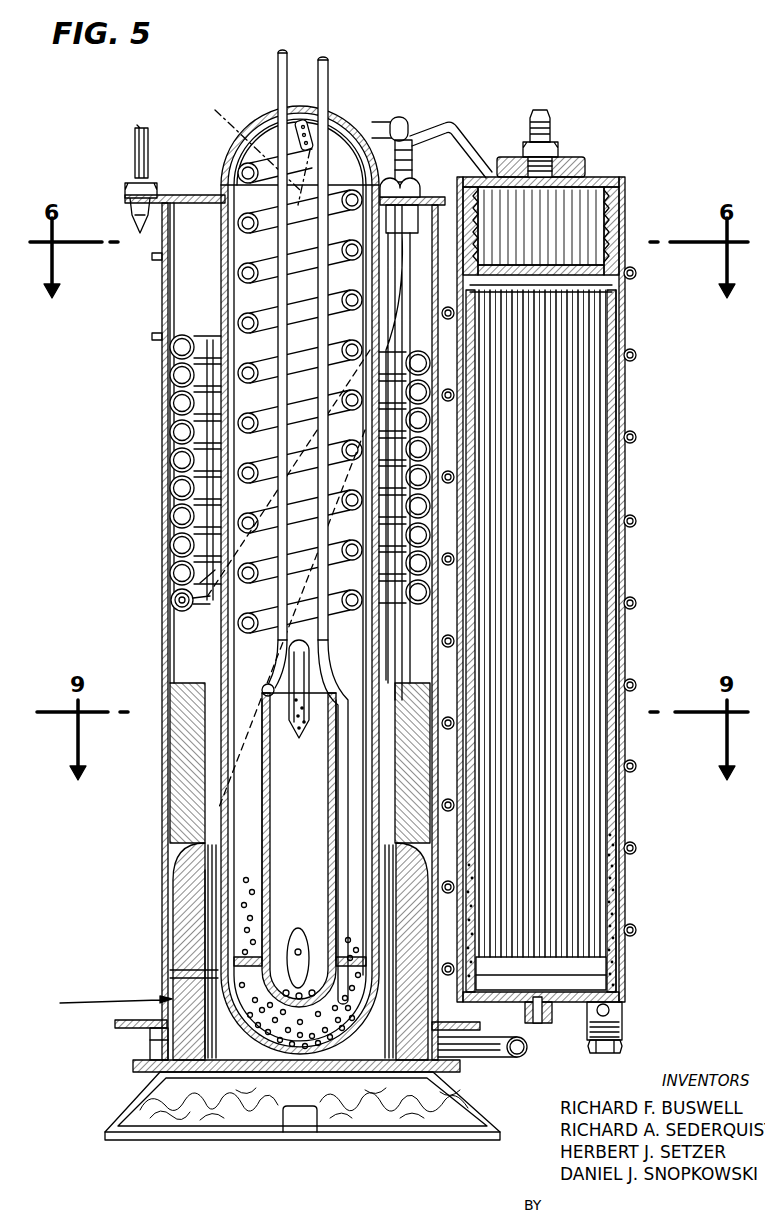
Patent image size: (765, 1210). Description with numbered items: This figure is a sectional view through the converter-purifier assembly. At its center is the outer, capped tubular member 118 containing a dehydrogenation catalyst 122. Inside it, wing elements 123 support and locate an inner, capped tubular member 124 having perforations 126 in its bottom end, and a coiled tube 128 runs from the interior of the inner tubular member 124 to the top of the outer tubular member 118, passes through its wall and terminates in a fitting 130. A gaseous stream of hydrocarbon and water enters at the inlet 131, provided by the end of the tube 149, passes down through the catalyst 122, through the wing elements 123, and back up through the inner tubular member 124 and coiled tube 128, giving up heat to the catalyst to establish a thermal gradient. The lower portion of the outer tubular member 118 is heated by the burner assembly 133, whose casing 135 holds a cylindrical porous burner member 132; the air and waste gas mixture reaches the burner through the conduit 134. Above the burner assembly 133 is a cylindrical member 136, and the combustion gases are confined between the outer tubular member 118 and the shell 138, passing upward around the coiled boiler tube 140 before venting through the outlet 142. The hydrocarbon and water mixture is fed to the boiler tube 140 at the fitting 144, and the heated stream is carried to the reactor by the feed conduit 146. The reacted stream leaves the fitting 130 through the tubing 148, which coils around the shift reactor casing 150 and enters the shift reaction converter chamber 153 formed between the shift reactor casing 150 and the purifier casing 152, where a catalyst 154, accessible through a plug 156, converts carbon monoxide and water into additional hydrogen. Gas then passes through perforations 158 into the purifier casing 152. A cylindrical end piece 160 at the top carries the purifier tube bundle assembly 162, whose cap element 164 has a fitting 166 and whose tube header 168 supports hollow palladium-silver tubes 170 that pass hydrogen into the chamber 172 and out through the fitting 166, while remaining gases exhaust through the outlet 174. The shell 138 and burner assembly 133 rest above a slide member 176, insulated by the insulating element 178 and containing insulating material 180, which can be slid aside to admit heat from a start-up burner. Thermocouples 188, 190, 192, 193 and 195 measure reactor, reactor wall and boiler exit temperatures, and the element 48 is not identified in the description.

The connector 48 is at (525, 112).
The outer capped tubular member 118 is at (192, 292).
The dehydrogenation catalyst 122 is at (247, 1028).
The wing elements 123 is at (247, 956).
The inner capped tubular member 124 is at (270, 865).
The perforations 126 is at (297, 960).
The coiled tube 128 is at (237, 397).
The fitting 130 is at (399, 118).
The inlet 131 is at (312, 128).
The porous burner member 132 is at (208, 910).
The burner assembly 133 is at (162, 1045).
The conduit 134 is at (520, 1060).
The casing 135 is at (157, 1037).
The cylindrical member 136 is at (412, 690).
The shell 138 is at (165, 655).
The coiled boiler tube 140 is at (172, 523).
The outlet 142 is at (178, 282).
The fitting 144 is at (455, 133).
The feed conduit 146 is at (172, 483).
The tubing 148 is at (640, 520).
The tube 149 is at (246, 150).
The shift reactor casing 150 is at (620, 835).
The purifier casing 152 is at (614, 798).
The shift reaction converter chamber 153 is at (612, 745).
The catalyst 154 is at (615, 902).
The plug 156 is at (625, 1052).
The perforations 158 is at (472, 333).
The cylindrical end piece 160 is at (628, 228).
The purifier tube bundle assembly 162 is at (600, 162).
The cap element 164 is at (568, 150).
The fitting 166 is at (555, 128).
The tube header 168 is at (526, 268).
The hollow tubes 170 is at (585, 418).
The chamber 172 is at (596, 215).
The outlet 174 is at (538, 1024).
The slide member 176 is at (430, 1142).
The insulating element 178 is at (340, 1065).
The insulating material 180 is at (212, 1128).
The thermocouple 188 is at (277, 88).
The thermocouple 190 is at (331, 86).
The thermocouple 192 is at (410, 185).
The thermocouple 193 is at (172, 980).
The thermocouple 195 is at (200, 612).